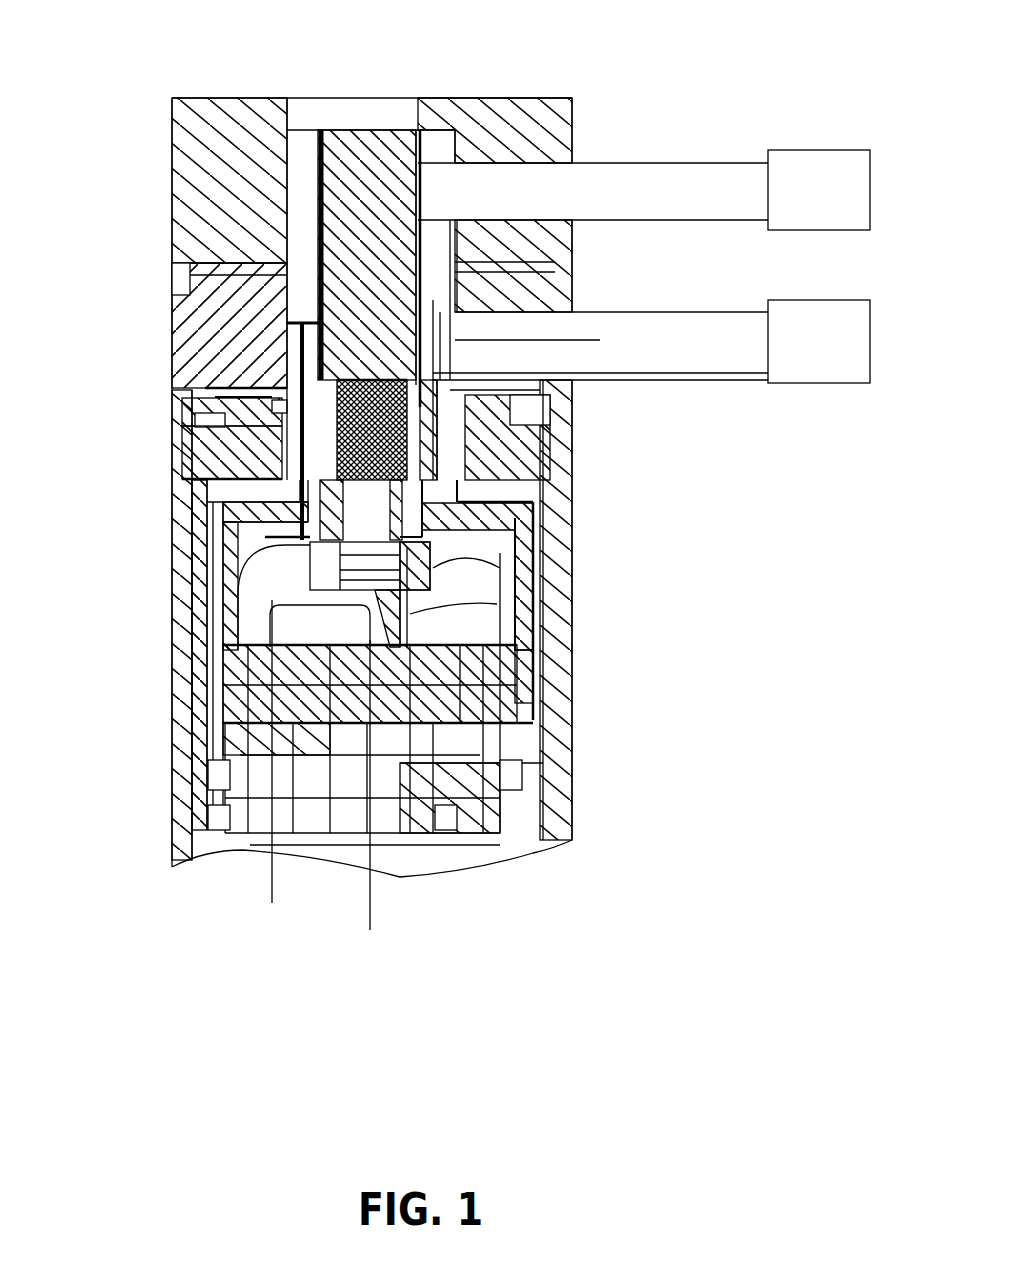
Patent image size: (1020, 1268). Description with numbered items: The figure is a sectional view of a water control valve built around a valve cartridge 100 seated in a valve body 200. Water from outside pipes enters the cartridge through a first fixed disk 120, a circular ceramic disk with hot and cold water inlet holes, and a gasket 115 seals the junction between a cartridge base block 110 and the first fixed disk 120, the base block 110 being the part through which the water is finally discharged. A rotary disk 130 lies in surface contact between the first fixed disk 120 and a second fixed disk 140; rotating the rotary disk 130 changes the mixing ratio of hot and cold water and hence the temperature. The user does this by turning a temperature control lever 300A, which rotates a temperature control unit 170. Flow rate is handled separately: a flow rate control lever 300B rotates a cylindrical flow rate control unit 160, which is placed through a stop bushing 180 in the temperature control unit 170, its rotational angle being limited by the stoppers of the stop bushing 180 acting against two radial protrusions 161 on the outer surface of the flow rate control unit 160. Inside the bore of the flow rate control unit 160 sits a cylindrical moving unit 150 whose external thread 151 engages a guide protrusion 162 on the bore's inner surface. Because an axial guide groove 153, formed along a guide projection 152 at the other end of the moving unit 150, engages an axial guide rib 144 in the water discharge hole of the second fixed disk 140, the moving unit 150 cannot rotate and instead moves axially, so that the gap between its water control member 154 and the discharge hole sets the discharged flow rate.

The valve cartridge 100 is at (250, 857).
The cartridge base block 110 is at (170, 818).
The gasket 115 is at (225, 761).
The first fixed disk 120 is at (578, 808).
The rotary disk 130 is at (578, 750).
The second fixed disk 140 is at (578, 683).
The axial guide rib 144 is at (527, 857).
The moving unit 150 is at (582, 465).
The external thread 151 is at (450, 345).
The guide projection 152 is at (578, 566).
The axial guide groove 153 is at (578, 622).
The water control member 154 is at (578, 516).
The flow rate control unit 160 is at (172, 352).
The radial protrusion 161 is at (172, 412).
The guide protrusion 162 is at (172, 452).
The temperature control unit 170 is at (168, 588).
The stop bushing 180 is at (172, 529).
The valve body 200 is at (170, 663).
The temperature control lever 300A is at (620, 312).
The flow rate control lever 300B is at (620, 178).